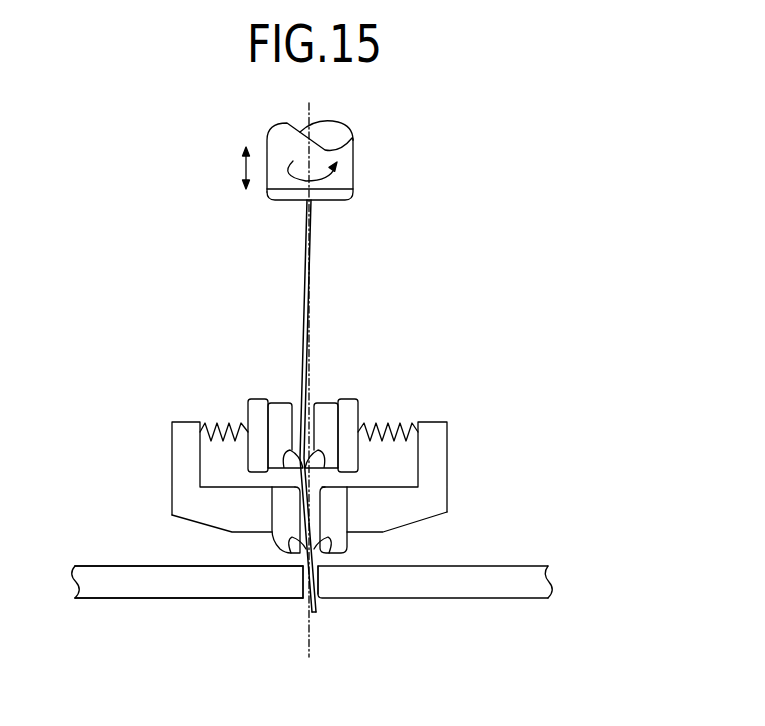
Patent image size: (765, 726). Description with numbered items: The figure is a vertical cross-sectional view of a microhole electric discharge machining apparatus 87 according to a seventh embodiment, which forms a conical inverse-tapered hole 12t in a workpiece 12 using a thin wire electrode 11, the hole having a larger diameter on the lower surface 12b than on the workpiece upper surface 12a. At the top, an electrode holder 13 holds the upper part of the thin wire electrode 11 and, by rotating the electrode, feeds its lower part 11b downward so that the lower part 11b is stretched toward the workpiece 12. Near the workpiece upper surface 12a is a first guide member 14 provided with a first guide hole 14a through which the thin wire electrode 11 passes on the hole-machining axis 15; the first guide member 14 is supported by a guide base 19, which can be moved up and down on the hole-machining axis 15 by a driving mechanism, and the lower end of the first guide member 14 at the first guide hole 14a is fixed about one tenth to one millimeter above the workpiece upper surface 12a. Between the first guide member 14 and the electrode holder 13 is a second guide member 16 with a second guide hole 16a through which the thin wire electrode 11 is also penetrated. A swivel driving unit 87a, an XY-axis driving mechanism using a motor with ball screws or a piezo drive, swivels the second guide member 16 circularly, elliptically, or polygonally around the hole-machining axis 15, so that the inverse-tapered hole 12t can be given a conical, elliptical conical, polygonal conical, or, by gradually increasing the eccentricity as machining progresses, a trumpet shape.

The thin wire electrode 11 is at (304, 243).
The lower part of the thin wire electrode 11b is at (318, 602).
The workpiece 12 is at (118, 577).
The workpiece upper surface 12a is at (105, 566).
The lower surface 12b is at (165, 600).
The inverse-tapered hole 12t is at (302, 606).
The electrode holder 13 is at (354, 160).
The first guide member 14 is at (337, 513).
The first guide hole 14a is at (300, 569).
The hole-machining axis 15 is at (311, 622).
The second guide member 16 is at (278, 412).
The second guide hole 16a is at (294, 483).
The guide base 19 is at (438, 468).
The microhole electric discharge machining apparatus 87 is at (476, 205).
The swivel driving unit 87a is at (389, 403).